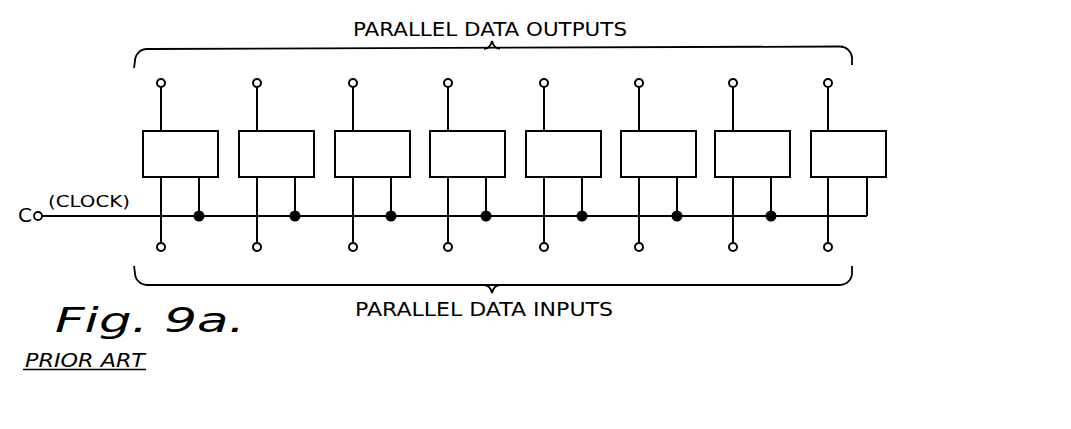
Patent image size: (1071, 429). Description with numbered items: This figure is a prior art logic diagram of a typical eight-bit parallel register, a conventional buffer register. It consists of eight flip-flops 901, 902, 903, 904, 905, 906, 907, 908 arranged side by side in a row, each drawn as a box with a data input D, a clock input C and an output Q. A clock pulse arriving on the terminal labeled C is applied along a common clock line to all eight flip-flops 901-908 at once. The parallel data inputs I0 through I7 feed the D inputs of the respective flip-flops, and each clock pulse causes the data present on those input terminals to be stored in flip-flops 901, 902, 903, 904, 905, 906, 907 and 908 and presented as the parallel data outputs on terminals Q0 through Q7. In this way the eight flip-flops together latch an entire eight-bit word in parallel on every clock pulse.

The flip-flop 901 is at (181, 131).
The flip-flop 902 is at (277, 131).
The flip-flop 903 is at (373, 131).
The flip-flop 904 is at (468, 131).
The flip-flop 905 is at (564, 131).
The flip-flop 906 is at (659, 131).
The flip-flop 907 is at (758, 131).
The flip-flop 908 is at (853, 131).